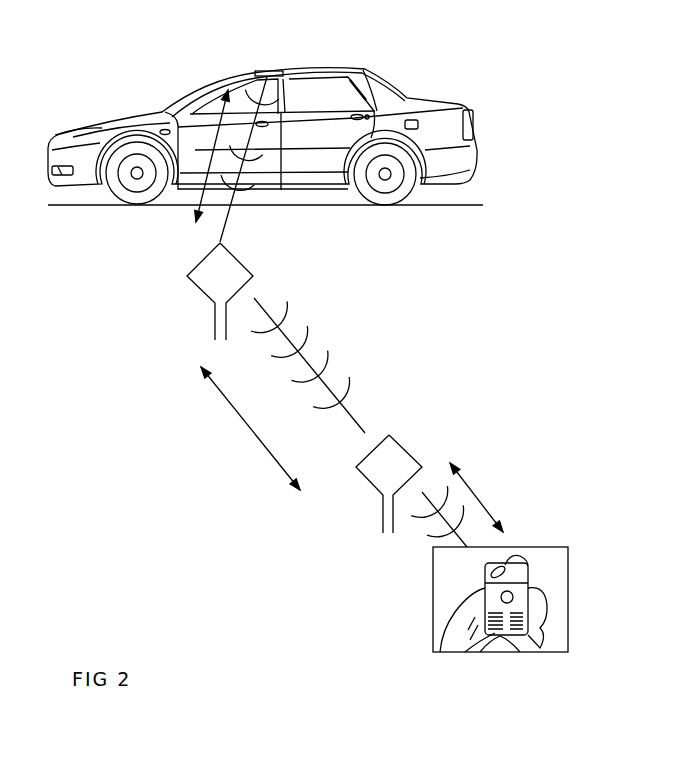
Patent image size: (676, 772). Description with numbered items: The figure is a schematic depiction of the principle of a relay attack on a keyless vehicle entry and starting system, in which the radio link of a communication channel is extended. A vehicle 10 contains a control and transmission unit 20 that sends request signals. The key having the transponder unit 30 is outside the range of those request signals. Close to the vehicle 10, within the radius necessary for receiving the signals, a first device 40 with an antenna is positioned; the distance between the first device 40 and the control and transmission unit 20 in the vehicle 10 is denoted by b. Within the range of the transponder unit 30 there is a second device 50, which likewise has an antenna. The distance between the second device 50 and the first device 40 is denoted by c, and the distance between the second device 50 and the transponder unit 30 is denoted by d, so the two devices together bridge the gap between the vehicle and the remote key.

The vehicle 10 is at (415, 92).
The control and transmission unit 20 is at (282, 70).
The transponder unit 30 is at (483, 568).
The first device 40 is at (232, 263).
The second device 50 is at (400, 455).
The distance b is at (213, 125).
The distance c is at (250, 428).
The distance d is at (481, 497).